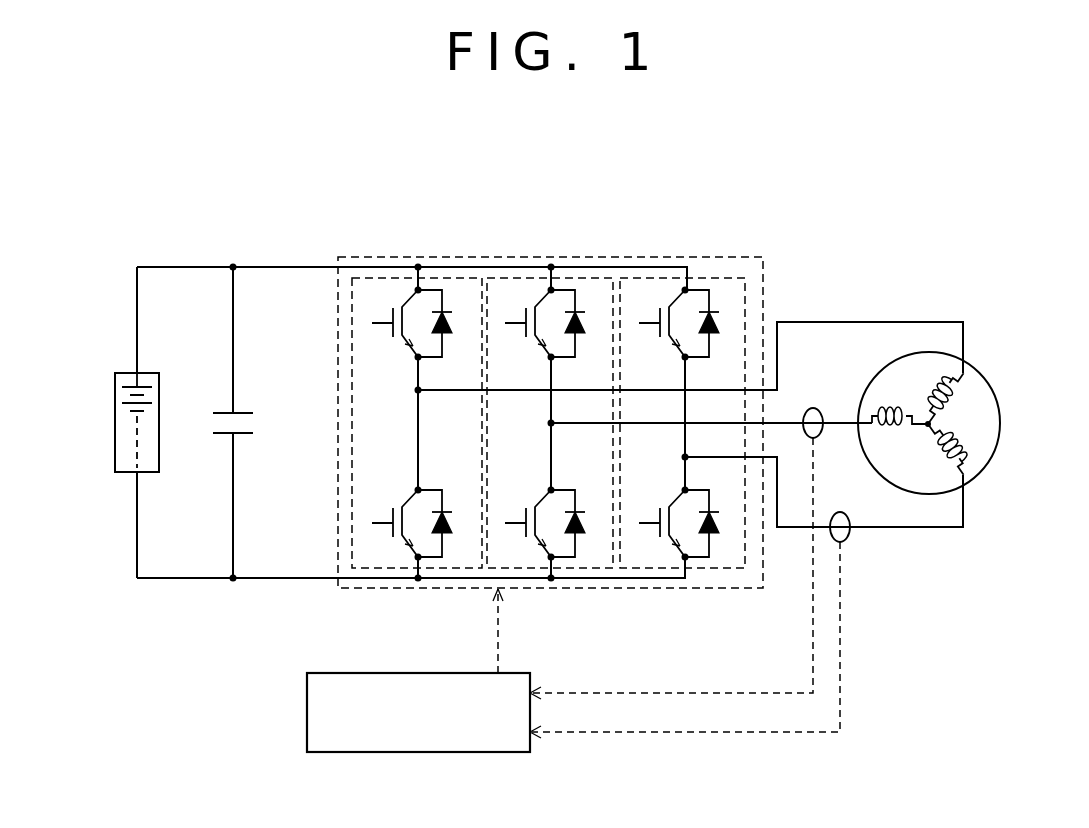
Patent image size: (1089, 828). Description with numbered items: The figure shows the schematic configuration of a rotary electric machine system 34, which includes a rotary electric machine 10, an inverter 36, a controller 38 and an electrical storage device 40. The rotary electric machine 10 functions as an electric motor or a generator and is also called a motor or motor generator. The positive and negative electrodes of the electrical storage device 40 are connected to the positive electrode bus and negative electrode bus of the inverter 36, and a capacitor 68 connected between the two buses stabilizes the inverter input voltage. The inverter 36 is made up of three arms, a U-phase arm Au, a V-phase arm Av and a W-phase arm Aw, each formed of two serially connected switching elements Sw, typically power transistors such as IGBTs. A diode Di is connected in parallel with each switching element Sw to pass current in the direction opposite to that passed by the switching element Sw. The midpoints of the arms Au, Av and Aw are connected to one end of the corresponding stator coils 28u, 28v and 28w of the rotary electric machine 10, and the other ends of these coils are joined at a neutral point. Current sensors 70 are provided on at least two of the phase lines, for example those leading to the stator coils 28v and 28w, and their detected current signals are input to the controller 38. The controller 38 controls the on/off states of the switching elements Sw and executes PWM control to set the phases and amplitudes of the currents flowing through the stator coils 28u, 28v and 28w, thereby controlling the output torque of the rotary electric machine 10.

The rotary electric machine 10 is at (968, 394).
The U-phase stator coil 28u is at (960, 377).
The V-phase stator coil 28v is at (912, 412).
The W-phase stator coil 28w is at (965, 472).
The rotary electric machine system 34 is at (898, 185).
The inverter 36 is at (550, 370).
The controller 38 is at (415, 753).
The electrical storage device 40 is at (115, 437).
The capacitor 68 is at (246, 434).
The current sensor 70 is at (813, 408).
The switching element Sw is at (403, 305).
The diode Di is at (443, 310).
The U-phase arm Au is at (418, 410).
The V-phase arm Av is at (551, 410).
The W-phase arm Aw is at (685, 380).